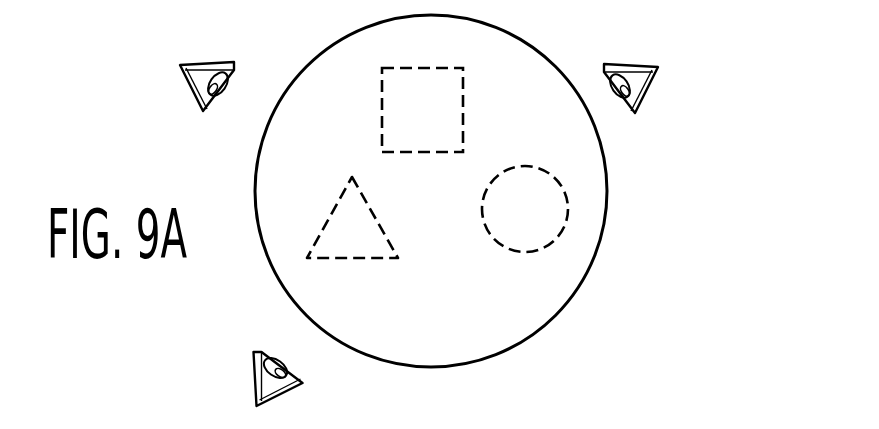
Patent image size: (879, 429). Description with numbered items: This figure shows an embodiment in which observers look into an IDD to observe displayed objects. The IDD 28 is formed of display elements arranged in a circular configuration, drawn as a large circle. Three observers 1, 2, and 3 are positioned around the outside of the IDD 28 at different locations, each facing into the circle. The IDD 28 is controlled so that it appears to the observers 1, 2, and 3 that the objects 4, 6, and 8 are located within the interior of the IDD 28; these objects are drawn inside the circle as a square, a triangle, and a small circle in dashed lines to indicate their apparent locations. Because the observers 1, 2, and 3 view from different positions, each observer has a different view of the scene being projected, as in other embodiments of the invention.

The observer 1 is at (647, 98).
The observer 2 is at (186, 93).
The observer 3 is at (252, 383).
The object 4 is at (463, 107).
The object 6 is at (352, 259).
The object 8 is at (525, 252).
The IDD 28 is at (595, 265).